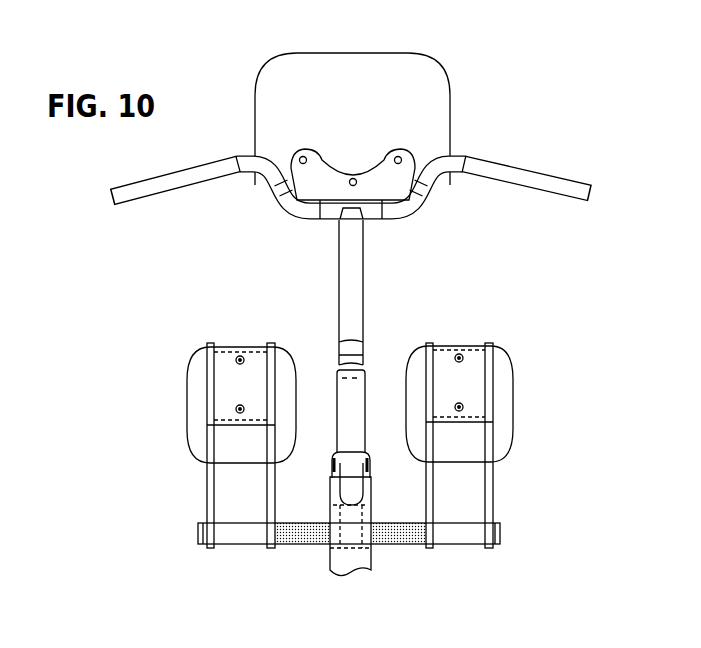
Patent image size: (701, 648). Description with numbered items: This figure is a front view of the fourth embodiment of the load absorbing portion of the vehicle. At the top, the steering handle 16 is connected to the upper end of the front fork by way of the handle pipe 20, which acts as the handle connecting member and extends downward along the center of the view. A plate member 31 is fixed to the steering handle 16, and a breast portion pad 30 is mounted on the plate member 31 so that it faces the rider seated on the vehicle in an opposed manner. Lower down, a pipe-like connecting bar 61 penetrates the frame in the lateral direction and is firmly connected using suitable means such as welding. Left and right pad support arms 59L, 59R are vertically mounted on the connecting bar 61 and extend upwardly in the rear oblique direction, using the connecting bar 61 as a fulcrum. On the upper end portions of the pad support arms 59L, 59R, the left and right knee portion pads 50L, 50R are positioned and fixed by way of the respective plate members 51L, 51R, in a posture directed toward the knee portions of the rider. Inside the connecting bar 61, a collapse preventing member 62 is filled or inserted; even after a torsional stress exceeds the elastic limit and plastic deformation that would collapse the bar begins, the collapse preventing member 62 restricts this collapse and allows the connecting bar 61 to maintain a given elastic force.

The steering handle 16 is at (537, 168).
The handle pipe 20 is at (358, 312).
The breast portion pad 30 is at (430, 106).
The plate member 31 is at (388, 182).
The left knee portion pad 50L is at (200, 390).
The right knee portion pad 50R is at (500, 388).
The left plate member 51L is at (225, 355).
The right plate member 51R is at (475, 352).
The left pad support arm 59L is at (208, 509).
The right pad support arm 59R is at (493, 503).
The connecting bar 61 is at (500, 535).
The collapse preventing member 62 is at (400, 567).